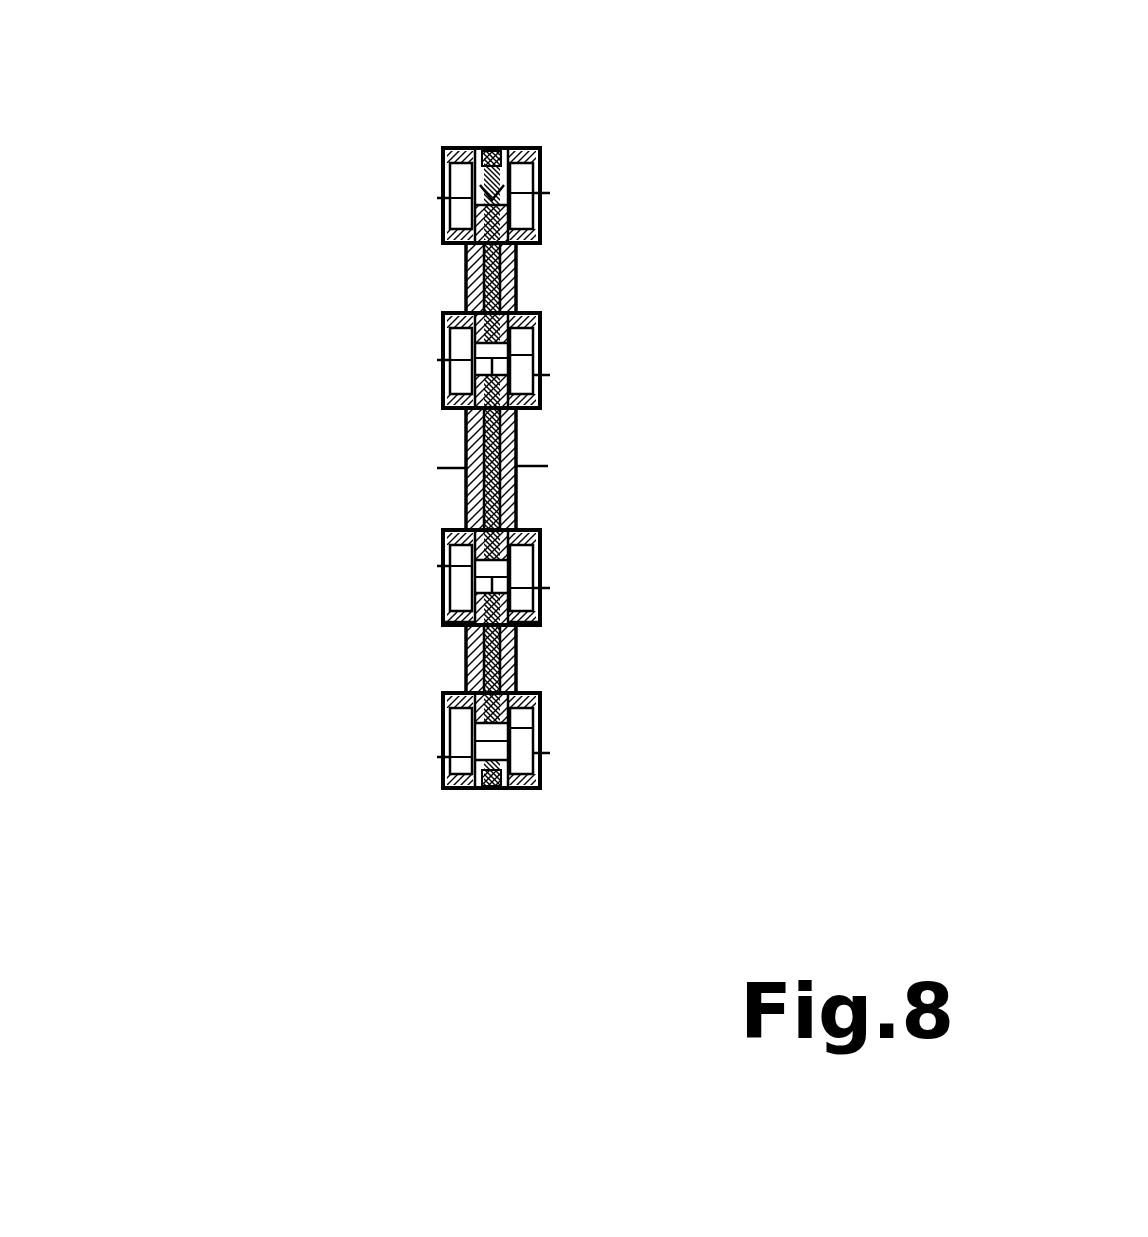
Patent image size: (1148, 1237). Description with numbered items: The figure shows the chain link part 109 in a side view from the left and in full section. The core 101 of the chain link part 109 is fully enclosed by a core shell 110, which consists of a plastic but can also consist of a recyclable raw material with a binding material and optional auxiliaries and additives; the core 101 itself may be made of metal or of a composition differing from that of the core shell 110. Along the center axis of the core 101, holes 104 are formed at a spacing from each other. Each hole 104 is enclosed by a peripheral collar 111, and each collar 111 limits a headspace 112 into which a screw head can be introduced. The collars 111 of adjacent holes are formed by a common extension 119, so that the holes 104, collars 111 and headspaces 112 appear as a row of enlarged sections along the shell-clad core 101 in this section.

The core 101 is at (465, 455).
The hole 104 is at (545, 193).
The chain link part 109 is at (320, 409).
The core shell 110 is at (462, 290).
The peripheral collar 111 is at (543, 620).
The headspace 112 is at (545, 375).
The common extension 119 is at (497, 148).